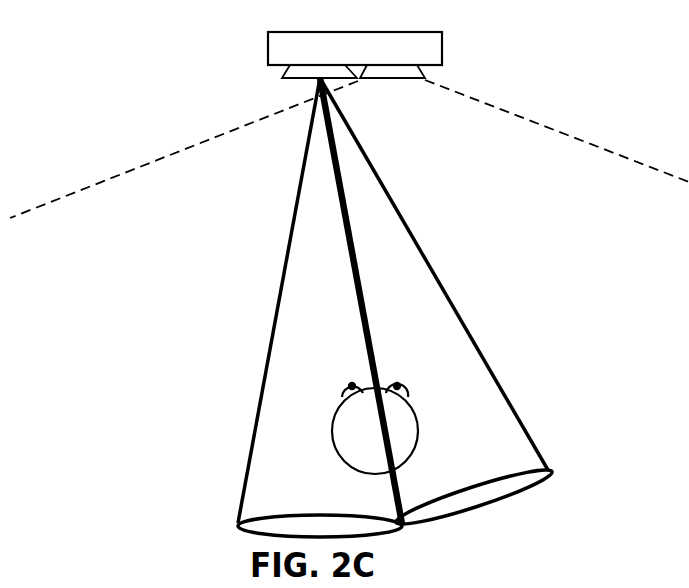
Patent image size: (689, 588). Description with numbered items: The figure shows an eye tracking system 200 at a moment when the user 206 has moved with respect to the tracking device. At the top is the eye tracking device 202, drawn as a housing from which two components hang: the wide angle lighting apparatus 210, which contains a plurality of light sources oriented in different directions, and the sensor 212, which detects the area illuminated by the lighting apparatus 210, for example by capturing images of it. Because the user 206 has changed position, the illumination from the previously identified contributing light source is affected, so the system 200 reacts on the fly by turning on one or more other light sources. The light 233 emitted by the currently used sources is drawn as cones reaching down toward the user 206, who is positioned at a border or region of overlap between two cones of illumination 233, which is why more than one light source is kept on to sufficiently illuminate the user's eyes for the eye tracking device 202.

The system 200 is at (62, 78).
The eye tracking device 202 is at (443, 43).
The wide angle lighting apparatus 210 is at (282, 78).
The sensor 212 is at (428, 77).
The user 206 is at (419, 422).
The cone of illumination 233 is at (508, 498).